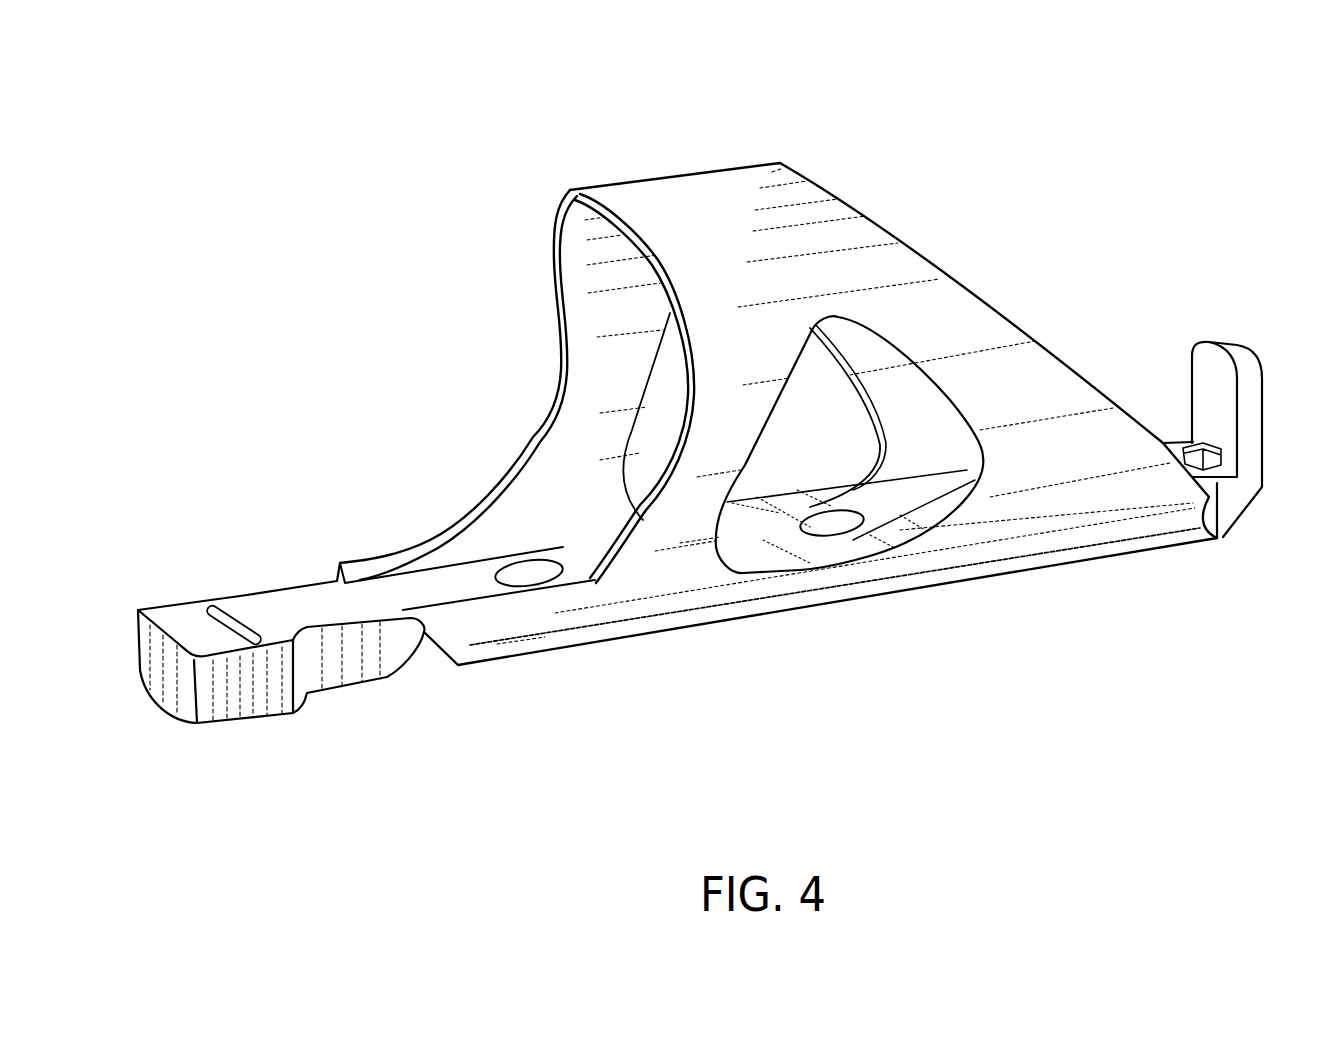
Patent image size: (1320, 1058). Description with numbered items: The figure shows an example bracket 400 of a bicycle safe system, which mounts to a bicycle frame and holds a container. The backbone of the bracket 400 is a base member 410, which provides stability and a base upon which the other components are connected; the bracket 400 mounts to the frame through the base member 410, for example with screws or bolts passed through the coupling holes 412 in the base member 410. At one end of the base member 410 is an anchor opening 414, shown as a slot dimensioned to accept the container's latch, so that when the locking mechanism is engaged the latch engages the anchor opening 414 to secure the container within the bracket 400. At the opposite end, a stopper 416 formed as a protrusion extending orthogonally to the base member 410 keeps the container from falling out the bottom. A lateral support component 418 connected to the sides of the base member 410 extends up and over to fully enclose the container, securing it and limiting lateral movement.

The bracket 400 is at (706, 78).
The base member 410 is at (343, 673).
The coupling holes 412 is at (527, 570).
The anchor opening 414 is at (213, 608).
The stopper 416 is at (1220, 340).
The lateral support component 418 is at (961, 293).